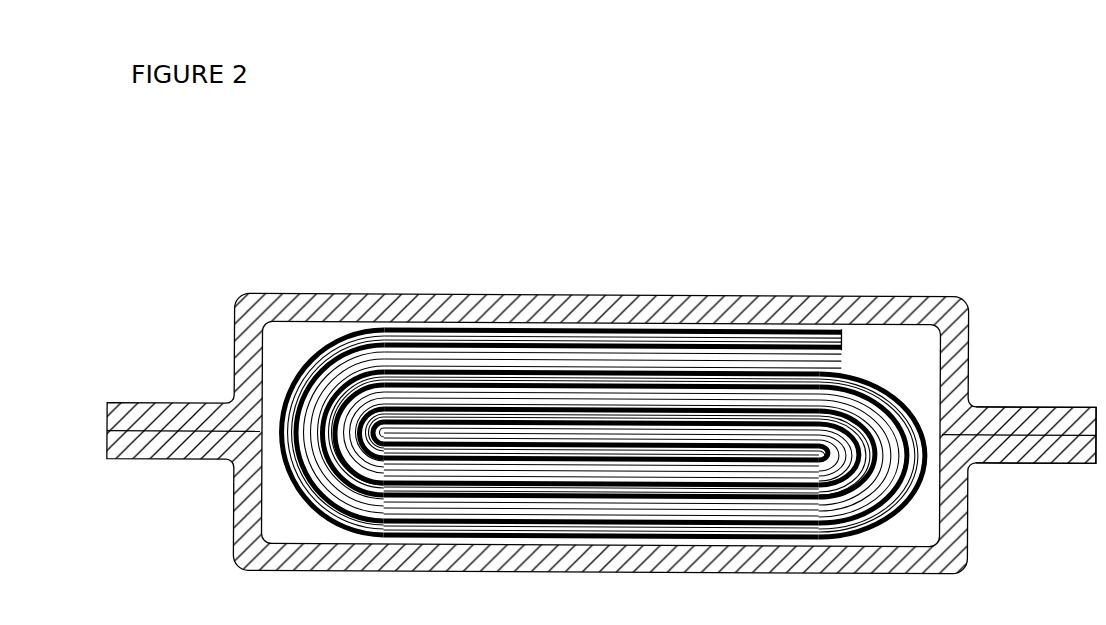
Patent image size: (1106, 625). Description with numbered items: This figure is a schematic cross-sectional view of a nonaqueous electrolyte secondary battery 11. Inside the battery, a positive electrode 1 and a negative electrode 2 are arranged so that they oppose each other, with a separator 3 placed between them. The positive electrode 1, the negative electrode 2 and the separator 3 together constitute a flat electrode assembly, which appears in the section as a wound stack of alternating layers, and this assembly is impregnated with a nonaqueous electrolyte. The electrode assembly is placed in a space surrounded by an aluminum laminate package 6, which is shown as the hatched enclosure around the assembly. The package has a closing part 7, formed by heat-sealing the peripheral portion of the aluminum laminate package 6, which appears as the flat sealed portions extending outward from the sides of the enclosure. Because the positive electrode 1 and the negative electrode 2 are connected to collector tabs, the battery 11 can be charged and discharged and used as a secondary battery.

The positive electrode 1 is at (819, 352).
The negative electrode 2 is at (834, 331).
The separator 3 is at (787, 321).
The aluminum laminate package 6 is at (940, 288).
The closing part 7 is at (1040, 397).
The nonaqueous electrolyte secondary battery 11 is at (601, 371).